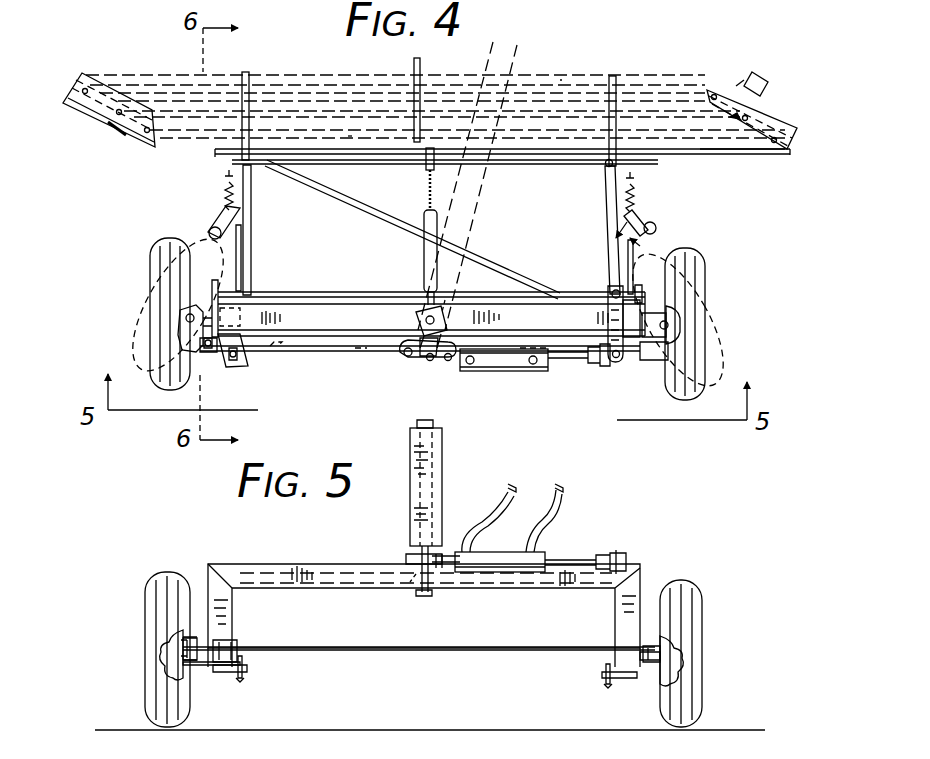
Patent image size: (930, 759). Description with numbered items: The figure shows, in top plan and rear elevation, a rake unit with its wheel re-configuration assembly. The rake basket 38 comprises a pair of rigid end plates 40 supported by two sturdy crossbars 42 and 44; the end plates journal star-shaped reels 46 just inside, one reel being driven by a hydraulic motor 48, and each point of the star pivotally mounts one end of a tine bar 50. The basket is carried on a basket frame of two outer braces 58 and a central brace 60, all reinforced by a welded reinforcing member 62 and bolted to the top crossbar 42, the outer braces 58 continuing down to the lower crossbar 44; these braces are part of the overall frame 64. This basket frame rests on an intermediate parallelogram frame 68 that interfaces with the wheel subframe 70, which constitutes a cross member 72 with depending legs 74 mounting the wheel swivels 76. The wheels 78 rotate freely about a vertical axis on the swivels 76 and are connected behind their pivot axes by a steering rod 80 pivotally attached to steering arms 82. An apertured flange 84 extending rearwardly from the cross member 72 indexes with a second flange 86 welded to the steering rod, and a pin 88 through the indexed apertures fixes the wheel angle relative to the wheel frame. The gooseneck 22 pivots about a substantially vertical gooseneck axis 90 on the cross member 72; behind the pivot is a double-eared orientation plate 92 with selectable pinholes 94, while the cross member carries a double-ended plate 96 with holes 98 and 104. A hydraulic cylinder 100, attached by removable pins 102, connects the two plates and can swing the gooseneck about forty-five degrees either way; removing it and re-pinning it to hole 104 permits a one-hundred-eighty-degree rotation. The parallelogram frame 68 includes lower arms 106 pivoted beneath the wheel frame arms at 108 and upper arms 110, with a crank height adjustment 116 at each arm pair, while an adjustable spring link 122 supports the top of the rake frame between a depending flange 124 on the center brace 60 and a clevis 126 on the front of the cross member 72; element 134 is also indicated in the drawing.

In FIG. 4, the gooseneck 22 is at (512, 60).
In FIG. 4, the rake basket 38 is at (284, 74).
In FIG. 4, the end plates 40 is at (92, 118).
In FIG. 4, the top crossbar 42 is at (536, 80).
In FIG. 4, the lower crossbar 44 is at (725, 160).
In FIG. 4, the reels 46 is at (120, 136).
In FIG. 4, the hydraulic motor 48 is at (754, 76).
In FIG. 4, the tine bar 50 is at (348, 134).
In FIG. 4, the outer braces 58 is at (246, 72).
In FIG. 4, the central brace 60 is at (421, 78).
In FIG. 4, the reinforcing member 62 is at (544, 162).
In FIG. 4, the overall frame 64 is at (202, 190).
In FIG. 4, the parallelogram frame 68 is at (412, 229).
In FIG. 5, the wheel subframe 70 is at (206, 552).
In FIG. 4, the cross member 72 is at (288, 316).
In FIG. 5, the cross member 72 is at (330, 572).
In FIG. 5, the depending legs 74 is at (232, 606).
In FIG. 5, the wheel swivels 76 is at (192, 668).
In FIG. 4, the wheels 78 is at (150, 256).
In FIG. 5, the wheels 78 is at (144, 606).
In FIG. 4, the steering rod 80 is at (328, 352).
In FIG. 5, the steering rod 80 is at (358, 648).
In FIG. 4, the steering arms 82 is at (180, 340).
In FIG. 5, the steering arms 82 is at (174, 654).
In FIG. 4, the apertured flange 84 is at (262, 344).
In FIG. 4, the second flange 86 is at (228, 358).
In FIG. 5, the second flange 86 is at (240, 646).
In FIG. 4, the pin 88 is at (254, 358).
In FIG. 4, the gooseneck axis 90 is at (421, 300).
In FIG. 5, the gooseneck axis 90 is at (410, 586).
In FIG. 4, the orientation plate 92 is at (422, 340).
In FIG. 5, the orientation plate 92 is at (402, 560).
In FIG. 4, the pinholes 94 is at (406, 354).
In FIG. 4, the double-ended plate 96 is at (604, 346).
In FIG. 5, the double-ended plate 96 is at (620, 560).
In FIG. 4, the hole 98 is at (608, 368).
In FIG. 5, the hole 98 is at (612, 552).
In FIG. 4, the hydraulic cylinder 100 is at (518, 360).
In FIG. 5, the hydraulic cylinder 100 is at (506, 566).
In FIG. 4, the removable pins 102 is at (438, 352).
In FIG. 5, the removable pins 102 is at (444, 568).
In FIG. 4, the pin hole 104 is at (606, 298).
In FIG. 4, the lower arms 106 is at (251, 232).
In FIG. 5, the lower arm pivots 108 is at (254, 670).
In FIG. 4, the upper arms 110 is at (235, 247).
In FIG. 4, the crank height adjustment 116 is at (220, 218).
In FIG. 4, the adjustable spring link 122 is at (423, 255).
In FIG. 4, the depending flange 124 is at (425, 166).
In FIG. 4, the clevis 126 is at (450, 292).
In FIG. 4, the vertical pivot post 134 is at (448, 328).
In FIG. 5, the vertical pivot post 134 is at (442, 458).